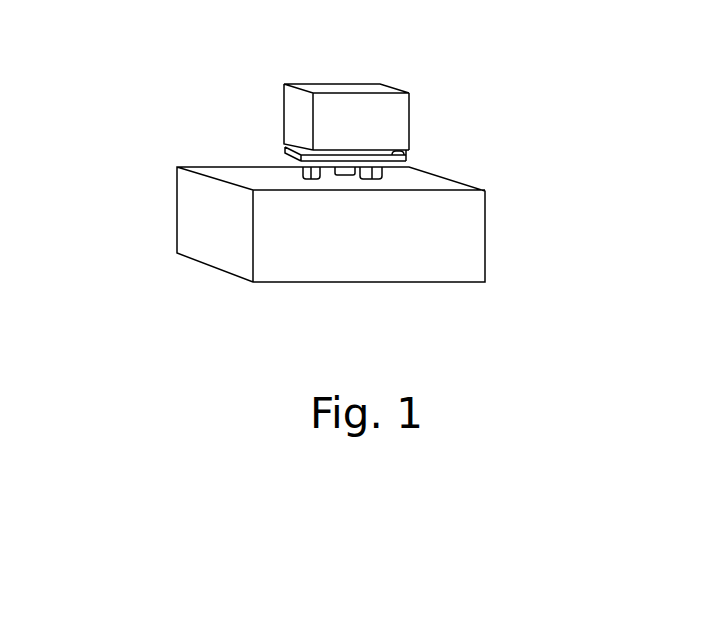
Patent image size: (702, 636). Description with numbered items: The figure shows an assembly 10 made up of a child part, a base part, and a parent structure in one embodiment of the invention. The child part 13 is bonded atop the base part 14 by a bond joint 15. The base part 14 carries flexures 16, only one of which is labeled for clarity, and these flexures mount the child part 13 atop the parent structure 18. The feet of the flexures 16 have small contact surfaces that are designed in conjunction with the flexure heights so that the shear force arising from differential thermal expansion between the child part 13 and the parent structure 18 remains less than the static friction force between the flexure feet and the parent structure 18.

The assembly 10 is at (114, 49).
The child part 13 is at (400, 116).
The base part 14 is at (406, 165).
The bond joint 15 is at (404, 155).
The flexures 16 is at (382, 177).
The parent structure 18 is at (422, 243).